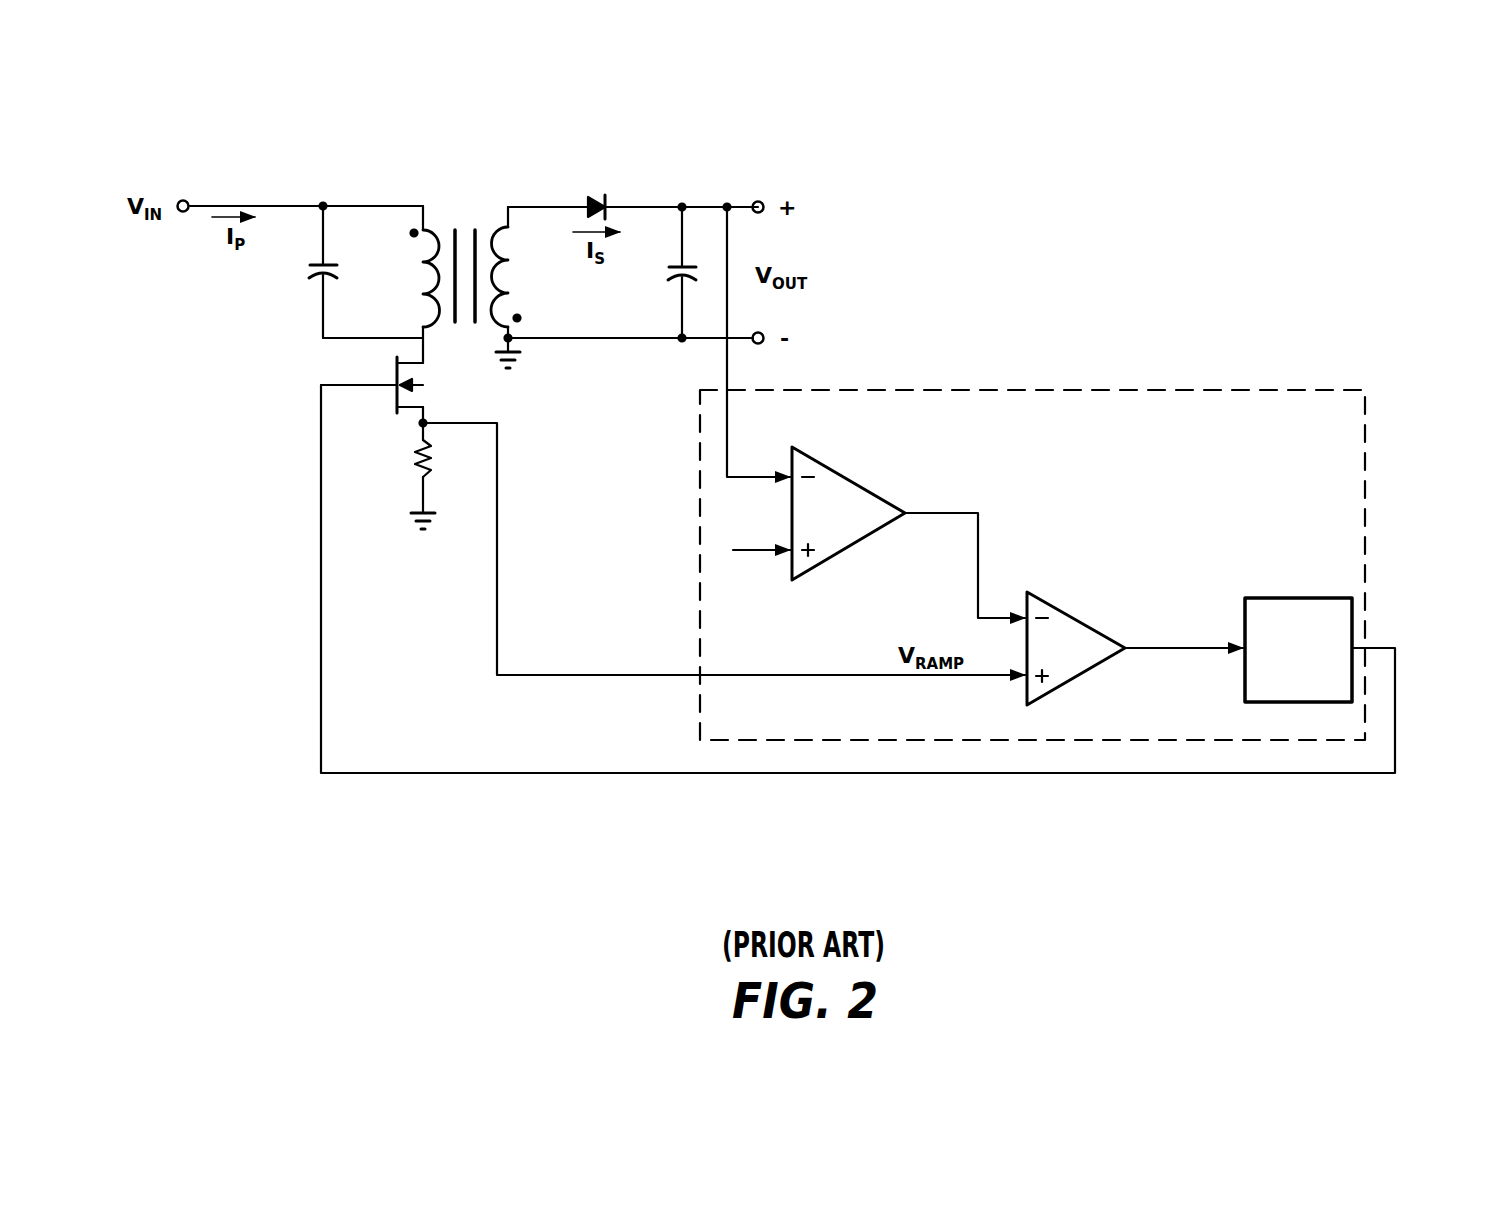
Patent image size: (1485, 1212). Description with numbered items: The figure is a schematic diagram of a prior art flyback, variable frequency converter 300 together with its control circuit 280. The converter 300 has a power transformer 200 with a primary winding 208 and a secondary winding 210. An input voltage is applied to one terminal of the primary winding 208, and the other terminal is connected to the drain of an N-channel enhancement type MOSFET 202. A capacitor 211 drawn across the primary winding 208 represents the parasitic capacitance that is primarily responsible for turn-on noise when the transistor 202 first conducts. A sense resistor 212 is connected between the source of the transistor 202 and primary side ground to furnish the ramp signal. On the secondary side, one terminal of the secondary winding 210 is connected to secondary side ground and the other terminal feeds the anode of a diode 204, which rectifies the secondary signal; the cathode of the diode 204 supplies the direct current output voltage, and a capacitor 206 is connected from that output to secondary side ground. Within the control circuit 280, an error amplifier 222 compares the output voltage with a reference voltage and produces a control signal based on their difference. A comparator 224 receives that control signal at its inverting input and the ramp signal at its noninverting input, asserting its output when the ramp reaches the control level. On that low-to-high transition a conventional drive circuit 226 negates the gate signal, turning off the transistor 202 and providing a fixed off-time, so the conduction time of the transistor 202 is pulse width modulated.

The power transformer 200 is at (463, 206).
The metal-oxide-semiconductor field-effect-transistor 202 is at (393, 397).
The diode 204 is at (600, 192).
The capacitor 206 is at (672, 275).
The primary winding 208 is at (420, 286).
The secondary winding 210 is at (512, 282).
The capacitor 211 is at (312, 272).
The sense resistor 212 is at (433, 458).
The error amplifier 222 is at (850, 487).
The comparator 224 is at (1060, 612).
The drive circuit 226 is at (1260, 597).
The control circuit 280 is at (1130, 390).
The flyback variable frequency converter 300 is at (1366, 814).